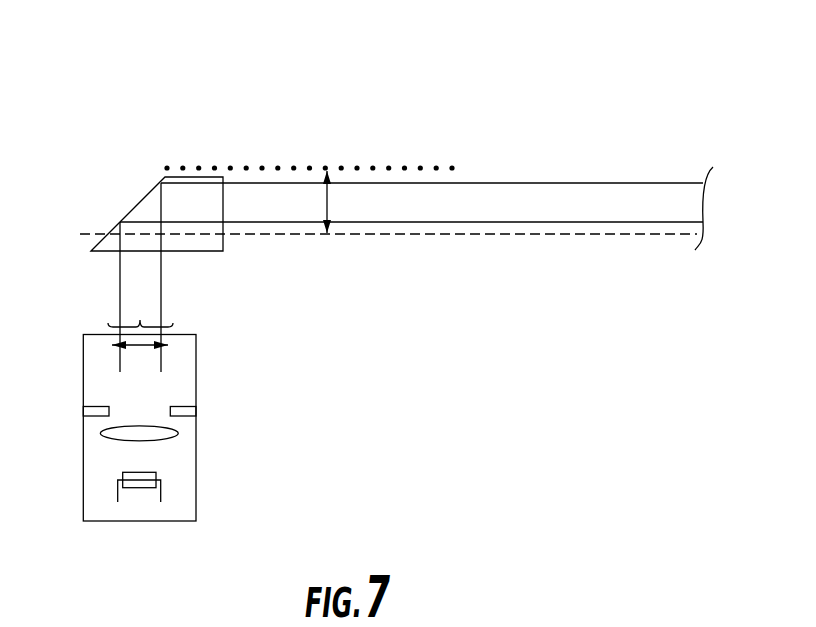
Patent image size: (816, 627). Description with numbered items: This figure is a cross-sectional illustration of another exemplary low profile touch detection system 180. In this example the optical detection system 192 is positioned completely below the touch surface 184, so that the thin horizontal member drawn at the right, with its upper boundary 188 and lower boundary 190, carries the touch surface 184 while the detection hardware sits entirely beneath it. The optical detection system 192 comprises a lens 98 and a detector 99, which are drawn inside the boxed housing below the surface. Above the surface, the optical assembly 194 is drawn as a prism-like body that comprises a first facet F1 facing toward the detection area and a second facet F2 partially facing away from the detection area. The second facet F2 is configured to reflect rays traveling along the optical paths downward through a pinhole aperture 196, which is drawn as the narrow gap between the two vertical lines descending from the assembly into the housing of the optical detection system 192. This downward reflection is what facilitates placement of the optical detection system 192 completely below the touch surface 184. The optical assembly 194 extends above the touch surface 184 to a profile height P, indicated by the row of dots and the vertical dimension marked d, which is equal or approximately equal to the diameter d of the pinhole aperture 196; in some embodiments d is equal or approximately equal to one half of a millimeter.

The touch detection system 180 is at (461, 110).
The touch surface 184 is at (415, 239).
The first surface of light guide 188 is at (487, 183).
The second surface of light guide 190 is at (593, 222).
The optical detection system 192 is at (197, 348).
The optical assembly 194 is at (155, 188).
The pinhole aperture 196 is at (140, 320).
The lens 98 is at (178, 432).
The image sensor 99 is at (156, 474).
The profile height P is at (342, 165).
The first facet F1 is at (222, 212).
The second facet F2 is at (207, 251).